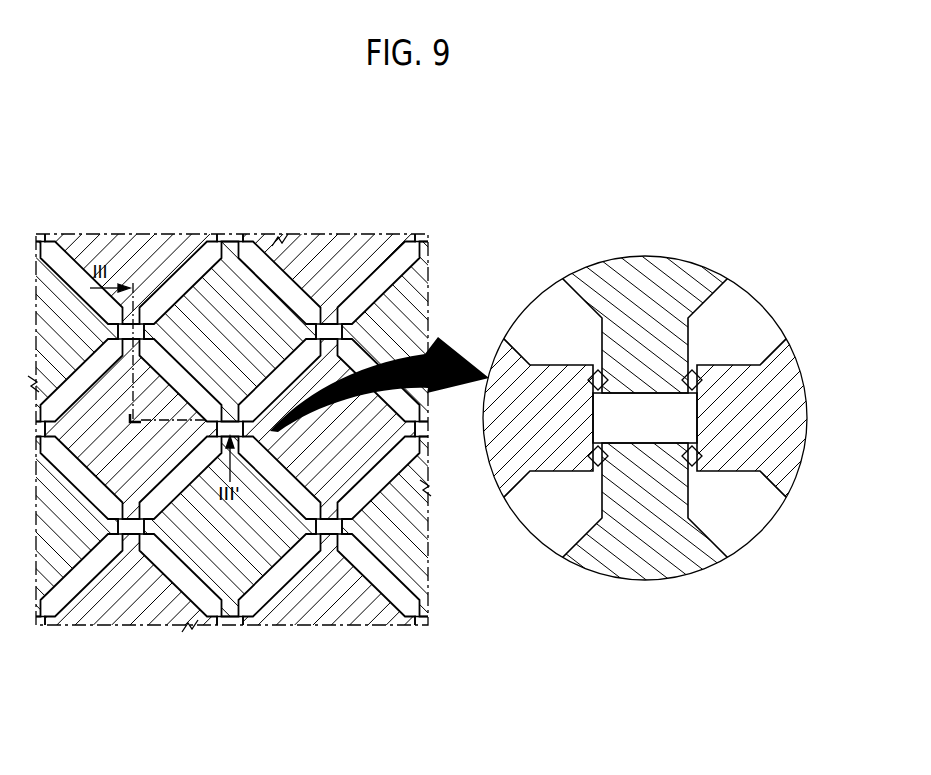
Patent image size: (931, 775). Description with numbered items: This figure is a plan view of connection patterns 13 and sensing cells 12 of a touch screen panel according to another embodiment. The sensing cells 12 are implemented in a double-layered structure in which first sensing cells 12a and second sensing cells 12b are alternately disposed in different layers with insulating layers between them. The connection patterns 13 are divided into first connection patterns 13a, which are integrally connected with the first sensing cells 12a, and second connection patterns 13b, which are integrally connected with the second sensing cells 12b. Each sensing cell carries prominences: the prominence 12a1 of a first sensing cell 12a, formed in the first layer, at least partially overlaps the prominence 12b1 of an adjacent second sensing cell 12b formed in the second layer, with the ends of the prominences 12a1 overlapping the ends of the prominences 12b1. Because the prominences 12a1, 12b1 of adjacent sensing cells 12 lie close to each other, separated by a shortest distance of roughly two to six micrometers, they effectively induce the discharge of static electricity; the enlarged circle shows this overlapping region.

The sensing cells 12 is at (250, 170).
The first sensing cells 12a is at (252, 320).
The second sensing cells 12b is at (296, 326).
The prominence of the first sensing cells 12a1 is at (218, 437).
The prominence of the second sensing cells 12b1 is at (243, 437).
The connection patterns 13 is at (93, 162).
The first connection patterns 13a is at (120, 320).
The second connection patterns 13b is at (157, 393).